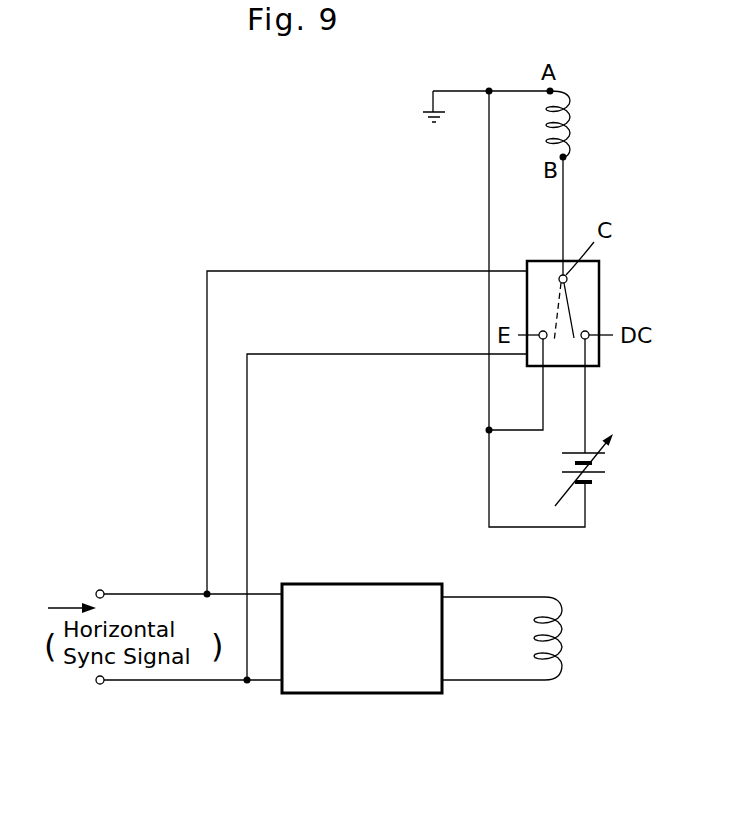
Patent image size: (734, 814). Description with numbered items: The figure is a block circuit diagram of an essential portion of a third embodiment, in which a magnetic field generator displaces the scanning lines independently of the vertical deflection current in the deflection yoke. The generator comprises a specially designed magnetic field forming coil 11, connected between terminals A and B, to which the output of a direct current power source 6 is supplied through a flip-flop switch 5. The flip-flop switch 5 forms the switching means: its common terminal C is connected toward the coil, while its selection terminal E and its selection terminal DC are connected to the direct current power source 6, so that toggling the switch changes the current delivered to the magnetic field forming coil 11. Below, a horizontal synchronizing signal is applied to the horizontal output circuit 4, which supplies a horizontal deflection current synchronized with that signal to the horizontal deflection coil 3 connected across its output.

The magnetic field forming coil 11 is at (572, 100).
The flip-flop switch 5 is at (600, 290).
The direct current power source 6 is at (603, 462).
The horizontal output circuit 4 is at (353, 582).
The horizontal deflection coil 3 is at (564, 606).